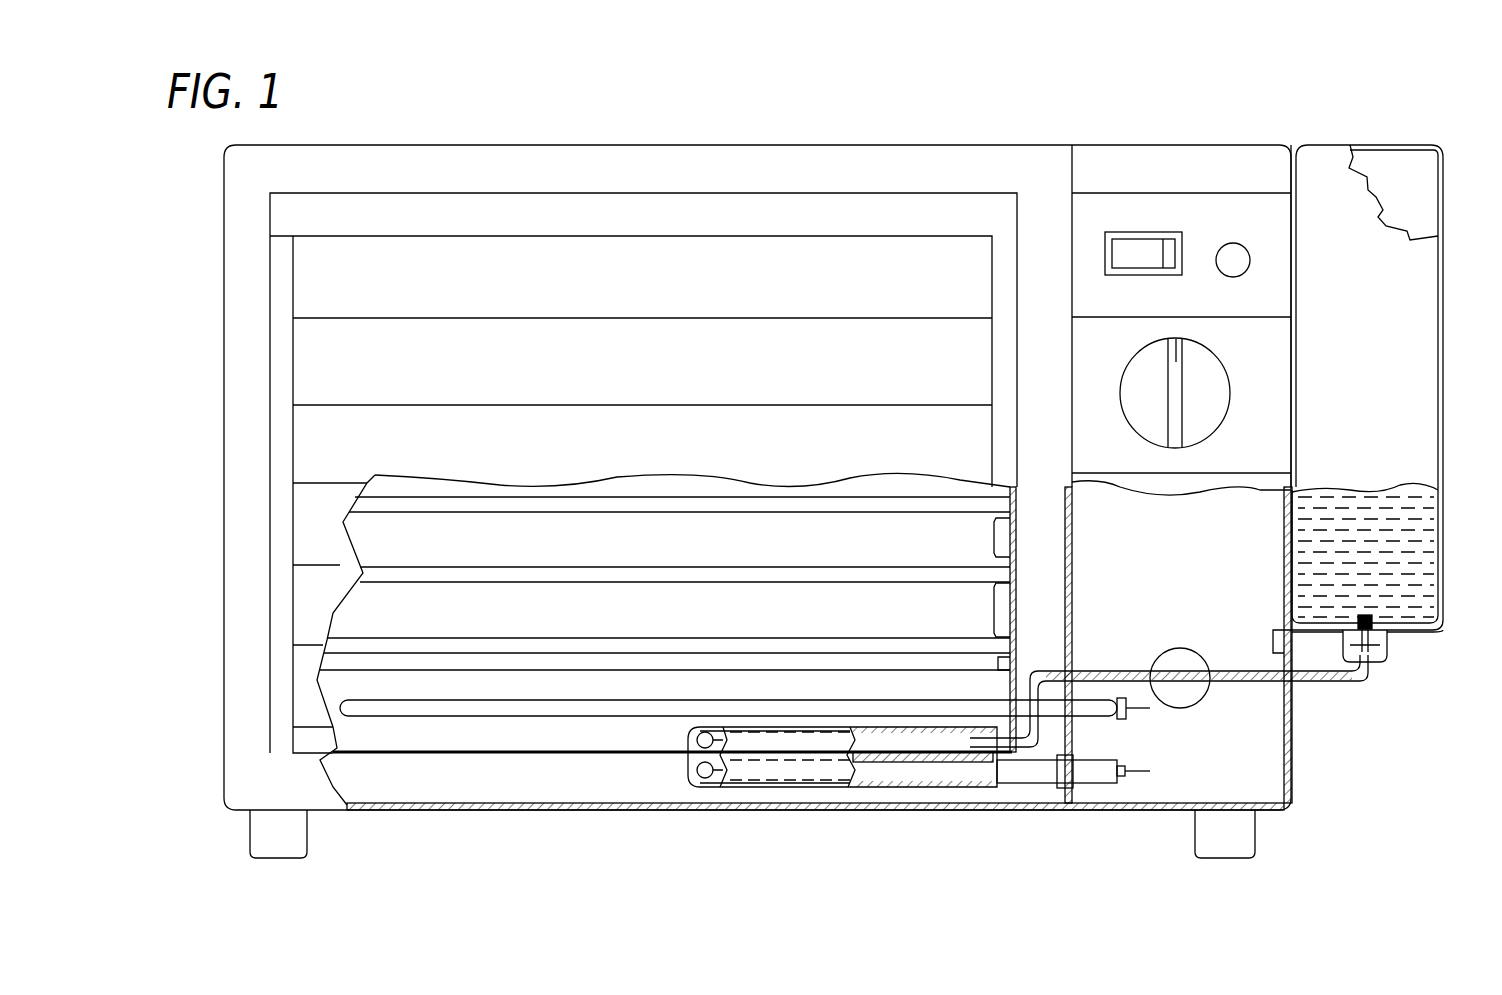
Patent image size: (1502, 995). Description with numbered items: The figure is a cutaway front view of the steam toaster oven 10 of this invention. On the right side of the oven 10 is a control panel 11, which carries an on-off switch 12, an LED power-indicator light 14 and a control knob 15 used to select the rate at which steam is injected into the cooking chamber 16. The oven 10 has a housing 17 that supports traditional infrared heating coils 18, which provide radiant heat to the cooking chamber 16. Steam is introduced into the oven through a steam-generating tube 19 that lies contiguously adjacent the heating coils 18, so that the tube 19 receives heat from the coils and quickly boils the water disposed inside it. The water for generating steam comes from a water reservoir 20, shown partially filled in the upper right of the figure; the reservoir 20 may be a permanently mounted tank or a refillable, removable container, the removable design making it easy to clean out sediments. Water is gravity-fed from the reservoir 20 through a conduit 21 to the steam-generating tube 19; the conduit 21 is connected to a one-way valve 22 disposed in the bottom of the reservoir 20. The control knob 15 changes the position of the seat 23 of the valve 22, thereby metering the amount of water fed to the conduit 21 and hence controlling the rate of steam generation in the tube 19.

The steam toaster oven 10 is at (1058, 124).
The control panel 11 is at (1201, 214).
The on-off switch 12 is at (1150, 231).
The LED power-indicator light 14 is at (1246, 243).
The control knob 15 is at (1212, 380).
The cooking chamber 16 is at (424, 549).
The housing 17 is at (243, 285).
The infrared heating coils 18 is at (543, 713).
The steam-generating tube 19 is at (947, 743).
The water reservoir 20 is at (1390, 548).
The conduit 21 is at (1040, 760).
The one-way valve 22 is at (1385, 656).
The seat 23 is at (1370, 600).